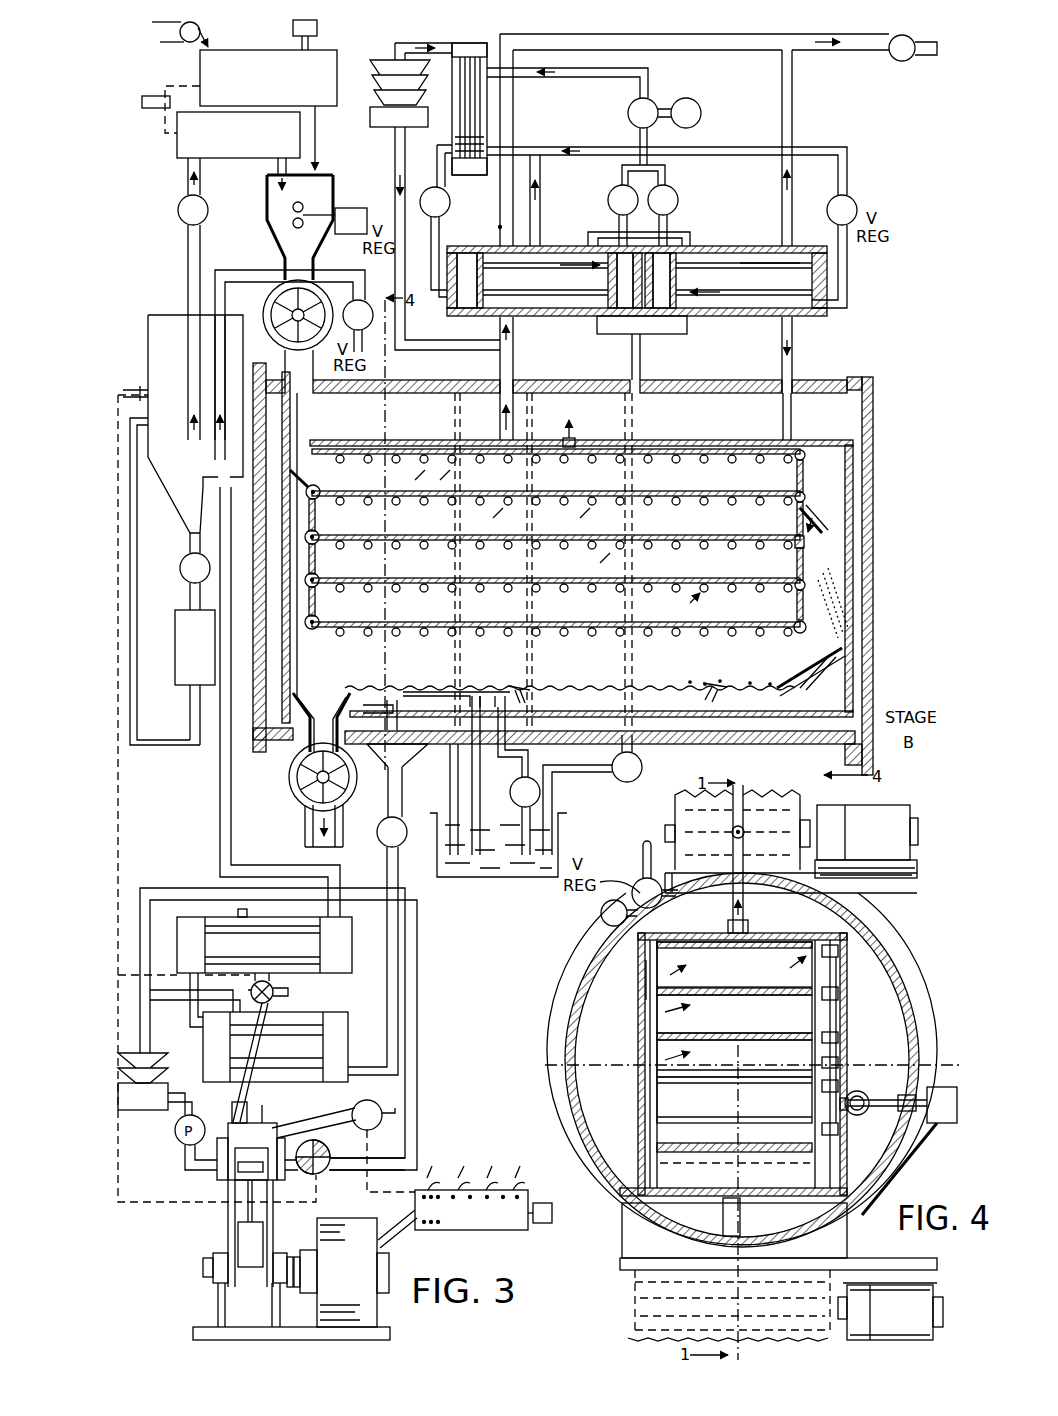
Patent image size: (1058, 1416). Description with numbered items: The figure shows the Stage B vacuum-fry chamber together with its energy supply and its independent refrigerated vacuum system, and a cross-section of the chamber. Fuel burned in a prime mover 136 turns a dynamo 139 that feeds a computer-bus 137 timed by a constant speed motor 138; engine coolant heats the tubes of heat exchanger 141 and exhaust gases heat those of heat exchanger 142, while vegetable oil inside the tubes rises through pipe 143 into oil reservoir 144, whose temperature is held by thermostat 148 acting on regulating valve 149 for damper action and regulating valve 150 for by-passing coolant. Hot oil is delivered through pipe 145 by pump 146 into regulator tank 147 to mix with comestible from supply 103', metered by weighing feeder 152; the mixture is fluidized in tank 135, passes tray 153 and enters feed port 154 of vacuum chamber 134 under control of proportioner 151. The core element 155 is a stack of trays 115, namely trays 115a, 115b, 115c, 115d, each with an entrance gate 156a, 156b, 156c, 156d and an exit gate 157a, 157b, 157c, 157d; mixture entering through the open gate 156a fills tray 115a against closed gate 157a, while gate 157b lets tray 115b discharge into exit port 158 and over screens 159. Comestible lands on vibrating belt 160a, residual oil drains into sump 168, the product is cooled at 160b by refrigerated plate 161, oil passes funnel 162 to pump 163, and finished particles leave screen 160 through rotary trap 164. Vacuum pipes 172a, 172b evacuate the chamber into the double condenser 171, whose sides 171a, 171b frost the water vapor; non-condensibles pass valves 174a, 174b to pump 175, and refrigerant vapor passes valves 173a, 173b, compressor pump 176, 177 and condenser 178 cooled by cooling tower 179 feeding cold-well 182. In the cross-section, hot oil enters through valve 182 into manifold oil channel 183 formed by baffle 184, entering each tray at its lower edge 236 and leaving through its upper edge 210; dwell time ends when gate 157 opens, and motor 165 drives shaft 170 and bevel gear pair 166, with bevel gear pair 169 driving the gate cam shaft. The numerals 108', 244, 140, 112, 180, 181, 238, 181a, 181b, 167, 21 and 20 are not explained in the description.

In FIG. 3, the supply of prepared comestible 103' is at (268, 78).
In FIG. 3, the inlet valve 108' is at (331, 31).
In FIG. 3, the weighing feeder 152 is at (200, 25).
In FIG. 3, the regulator tank 147 is at (252, 146).
In FIG. 3, the proportioner 151 is at (150, 108).
In FIG. 3, the pump 146 is at (178, 214).
In FIG. 3, the pipe 145 is at (188, 270).
In FIG. 3, the tank 135 is at (266, 212).
In FIG. 3, the valve actuator 244 is at (357, 208).
In FIG. 3, the tray 153 is at (270, 307).
In FIG. 4, the tray 153 is at (675, 822).
In FIG. 3, the cold-well / valve 182 is at (352, 300).
In FIG. 4, the cold-well / valve 182 is at (645, 880).
In FIG. 3, the thermostat 148 is at (165, 386).
In FIG. 3, the oil reservoir 144 is at (208, 507).
In FIG. 3, the pipe 143 is at (220, 830).
In FIG. 3, the heat exchanger 142 is at (345, 968).
In FIG. 3, the regulating valve 149 is at (276, 989).
In FIG. 3, the heat exchanger 141 is at (343, 1068).
In FIG. 3, the pump head 140 is at (218, 1176).
In FIG. 3, the regulating valve 150 is at (320, 1176).
In FIG. 3, the prime mover 136 is at (226, 1222).
In FIG. 3, the dynamo 139 is at (360, 1261).
In FIG. 3, the computer-bus 137 is at (483, 1222).
In FIG. 3, the constant speed motor 138 is at (545, 1223).
In FIG. 3, the pump 163 is at (402, 846).
In FIG. 3, the processing chamber housing 112 is at (663, 382).
In FIG. 3, the vacuum chamber 134 is at (556, 386).
In FIG. 4, the vacuum chamber 134 is at (583, 993).
In FIG. 3, the feed port 154 is at (308, 428).
In FIG. 3, the core element 155 is at (655, 441).
In FIG. 3, the trays 115 is at (717, 449).
In FIG. 4, the trays 115 is at (640, 1105).
In FIG. 3, the tray 115a is at (470, 493).
In FIG. 3, the tray 115b is at (582, 537).
In FIG. 3, the tray 115c is at (656, 581).
In FIG. 3, the tray 115d is at (710, 623).
In FIG. 3, the entrance gate 156a is at (308, 485).
In FIG. 4, the entrance gate 156a is at (741, 972).
In FIG. 3, the entrance gate 156b is at (315, 519).
In FIG. 4, the entrance gate 156b is at (726, 1026).
In FIG. 3, the entrance gate 156c is at (315, 563).
In FIG. 3, the entrance gate 156d is at (315, 606).
In FIG. 3, the exit gate 157a is at (806, 466).
In FIG. 3, the exit gate 157b is at (812, 500).
In FIG. 3, the exit gate 157c is at (806, 578).
In FIG. 3, the exit gate 157d is at (806, 622).
In FIG. 3, the exit port 158 is at (798, 530).
In FIG. 3, the screens 159 is at (847, 548).
In FIG. 3, the screen 160 is at (328, 702).
In FIG. 3, the vibrating belt 160a is at (705, 664).
In FIG. 3, the belt portion 160b is at (451, 672).
In FIG. 3, the refrigerated plate 161 is at (565, 695).
In FIG. 3, the funnel 162 is at (408, 738).
In FIG. 3, the sump 168 is at (788, 690).
In FIG. 3, the circulation pump 180 is at (512, 794).
In FIG. 3, the circulation pump 181 is at (610, 772).
In FIG. 3, the rotary trap 164 is at (290, 772).
In FIG. 4, the rotary trap 164 is at (773, 1327).
In FIG. 3, the vacuum pipe 172a is at (497, 341).
In FIG. 3, the vacuum pipe 172b is at (794, 352).
In FIG. 3, the inlet pipe 238 is at (800, 375).
In FIG. 4, the inlet pipe 238 is at (745, 800).
In FIG. 3, the vacuum pump or jet pump 175 is at (897, 63).
In FIG. 3, the valve 174a is at (494, 231).
In FIG. 3, the valve 174b is at (794, 228).
In FIG. 3, the condenser 178 is at (468, 43).
In FIG. 3, the cooling tower 179 is at (383, 127).
In FIG. 3, the vacuum regulator 181a is at (385, 230).
In FIG. 3, the vacuum regulator 181b is at (857, 205).
In FIG. 3, the pump 177 is at (585, 116).
In FIG. 3, the pump 176 is at (700, 101).
In FIG. 3, the valve 173a is at (616, 188).
In FIG. 3, the valve 173b is at (678, 195).
In FIG. 3, the double condenser 171 is at (687, 306).
In FIG. 3, the refrigerated condenser 171a is at (548, 246).
In FIG. 3, the refrigerated condenser 171b is at (735, 246).
In FIG. 4, the gate 157 is at (736, 1106).
In FIG. 4, the bevel gear pair 169 is at (815, 1112).
In FIG. 4, the upper and opposite edge 210 is at (738, 967).
In FIG. 4, the lower edge 236 is at (646, 978).
In FIG. 4, the manifold oil channel 183 is at (648, 1012).
In FIG. 4, the baffle 184 is at (642, 1062).
In FIG. 4, the clamp 167 is at (848, 1023).
In FIG. 4, the shaft 170 is at (870, 1097).
In FIG. 4, the motor 165 is at (950, 1085).
In FIG. 4, the bevel gear pair 166 is at (856, 1118).
In FIG. 4, the upper motor 21 is at (874, 844).
In FIG. 4, the lower motor 20 is at (907, 1320).